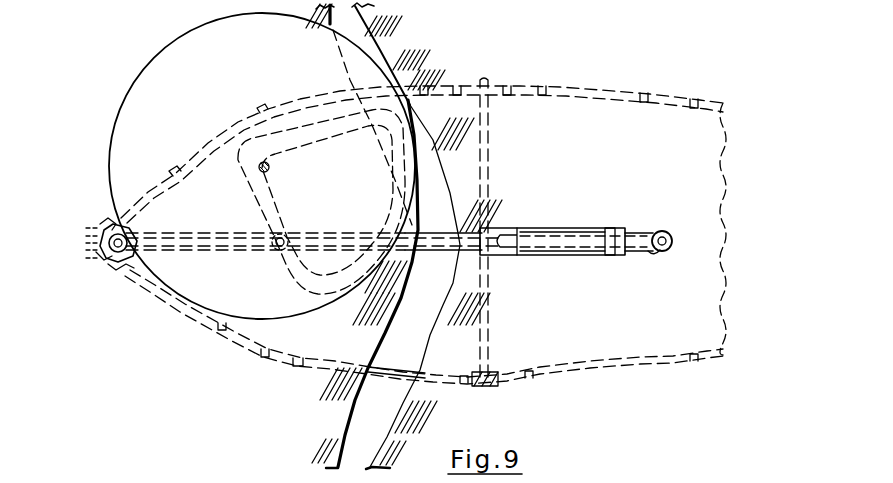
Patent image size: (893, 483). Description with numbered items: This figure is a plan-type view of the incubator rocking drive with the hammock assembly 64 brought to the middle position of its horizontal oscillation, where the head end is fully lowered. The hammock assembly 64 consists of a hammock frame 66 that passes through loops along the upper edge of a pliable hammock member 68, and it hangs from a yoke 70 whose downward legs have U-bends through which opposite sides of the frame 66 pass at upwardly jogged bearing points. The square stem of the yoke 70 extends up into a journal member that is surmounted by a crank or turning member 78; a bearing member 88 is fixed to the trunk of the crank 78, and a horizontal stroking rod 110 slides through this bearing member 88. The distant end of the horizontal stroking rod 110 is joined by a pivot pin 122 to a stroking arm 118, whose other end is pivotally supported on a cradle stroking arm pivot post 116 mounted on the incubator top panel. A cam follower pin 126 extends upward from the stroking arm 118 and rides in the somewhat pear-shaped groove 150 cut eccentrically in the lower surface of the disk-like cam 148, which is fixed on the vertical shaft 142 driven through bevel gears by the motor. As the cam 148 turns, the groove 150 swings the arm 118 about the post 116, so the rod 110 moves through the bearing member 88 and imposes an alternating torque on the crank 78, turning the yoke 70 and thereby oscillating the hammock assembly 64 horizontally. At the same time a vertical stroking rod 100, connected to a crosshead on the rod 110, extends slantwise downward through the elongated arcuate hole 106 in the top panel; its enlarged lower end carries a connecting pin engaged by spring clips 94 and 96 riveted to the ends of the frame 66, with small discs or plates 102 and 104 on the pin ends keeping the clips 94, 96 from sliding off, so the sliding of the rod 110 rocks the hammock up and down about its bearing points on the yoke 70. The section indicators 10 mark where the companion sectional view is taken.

The section line 10 is at (105, 395).
The framed hammock assembly 64 is at (603, 81).
The hammock frame 66 is at (576, 386).
The hammock member 68 is at (724, 157).
The yoke 70 is at (492, 310).
The crank or turning member 78 is at (546, 229).
The bearing member 88 is at (607, 228).
The spring clip 94 is at (101, 226).
The spring clip 96 is at (112, 266).
The vertical stroking rod 100 is at (451, 232).
The disc or plate 102 is at (90, 222).
The disc or plate 104 is at (98, 256).
The arcuate hole 106 is at (430, 340).
The horizontal stroking rod 110 is at (632, 258).
The cradle stroking arm pivot post 116 is at (135, 228).
The stroking arm 118 is at (446, 251).
The pivot pin 122 is at (657, 252).
The cam follower pin 126 is at (278, 252).
The shaft 142 is at (275, 167).
The cam 148 is at (140, 72).
The pear-shaped groove 150 is at (248, 194).